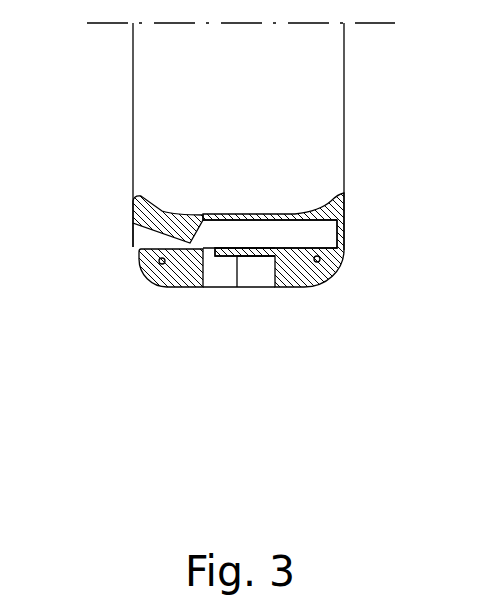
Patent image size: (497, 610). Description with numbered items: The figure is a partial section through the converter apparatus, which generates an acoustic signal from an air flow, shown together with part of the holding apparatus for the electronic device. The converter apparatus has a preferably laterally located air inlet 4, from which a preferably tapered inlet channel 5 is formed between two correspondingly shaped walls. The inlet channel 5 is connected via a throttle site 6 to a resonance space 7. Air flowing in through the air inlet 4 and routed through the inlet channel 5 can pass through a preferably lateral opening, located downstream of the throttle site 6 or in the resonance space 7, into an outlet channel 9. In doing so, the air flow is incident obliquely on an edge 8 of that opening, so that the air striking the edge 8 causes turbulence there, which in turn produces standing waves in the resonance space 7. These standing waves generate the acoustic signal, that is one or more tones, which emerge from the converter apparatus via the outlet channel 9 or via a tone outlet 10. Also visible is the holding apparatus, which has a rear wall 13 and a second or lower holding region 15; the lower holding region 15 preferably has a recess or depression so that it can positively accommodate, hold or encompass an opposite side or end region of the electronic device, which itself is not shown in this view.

The rear wall 13 is at (345, 138).
The second or lower holding region 15 is at (240, 212).
The inlet channel 5 is at (143, 228).
The air inlet 4 is at (134, 234).
The throttle site 6 is at (137, 244).
The resonance space 7 is at (320, 233).
The edge 8 is at (216, 252).
The outlet channel 9 is at (253, 272).
The tone outlet 10 is at (243, 280).